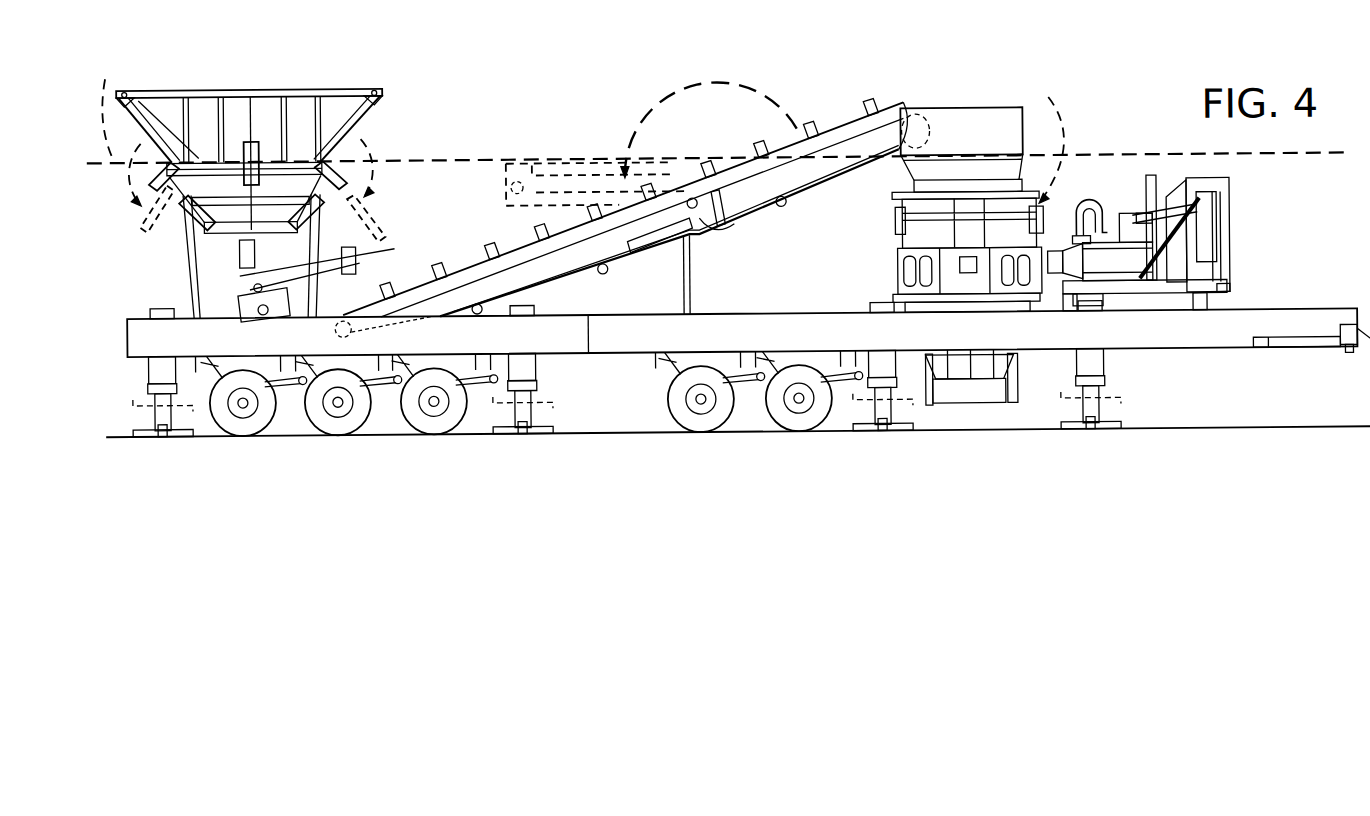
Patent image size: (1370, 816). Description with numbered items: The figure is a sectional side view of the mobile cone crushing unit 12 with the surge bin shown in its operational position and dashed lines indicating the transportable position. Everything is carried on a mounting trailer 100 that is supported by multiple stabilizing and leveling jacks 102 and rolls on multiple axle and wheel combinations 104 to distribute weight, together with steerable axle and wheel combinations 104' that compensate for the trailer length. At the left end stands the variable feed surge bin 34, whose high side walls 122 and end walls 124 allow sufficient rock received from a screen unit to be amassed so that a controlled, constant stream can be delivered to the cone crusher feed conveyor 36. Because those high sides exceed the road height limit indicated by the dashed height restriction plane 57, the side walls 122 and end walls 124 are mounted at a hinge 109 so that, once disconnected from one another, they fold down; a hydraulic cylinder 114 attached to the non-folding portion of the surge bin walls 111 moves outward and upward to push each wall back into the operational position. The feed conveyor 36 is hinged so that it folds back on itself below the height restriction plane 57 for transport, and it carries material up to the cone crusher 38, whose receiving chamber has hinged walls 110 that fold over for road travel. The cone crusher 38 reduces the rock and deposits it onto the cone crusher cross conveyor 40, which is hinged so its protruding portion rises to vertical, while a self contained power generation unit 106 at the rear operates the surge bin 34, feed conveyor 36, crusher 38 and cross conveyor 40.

The mobile cone crushing unit 12 is at (578, 77).
The surge bin 34 is at (267, 90).
The cone crusher feed conveyor 36 is at (737, 220).
The cone crusher 38 is at (960, 156).
The cone crusher cross conveyor 40 is at (978, 395).
The height restriction plane 57 is at (103, 107).
The mounting trailer 100 is at (140, 337).
The stabilizing and leveling jacks 102 is at (177, 438).
The axle and wheel combinations 104 is at (350, 420).
The steerable axle and wheel combinations 104' is at (763, 416).
The self contained power generation unit 106 is at (1127, 201).
The hinge 109 is at (264, 147).
The hinged walls 110 is at (985, 130).
The non-folding portion of the surge bin walls 111 is at (233, 215).
The hydraulic cylinder 114 is at (185, 223).
The side walls 122 is at (203, 128).
The end walls 124 is at (370, 117).